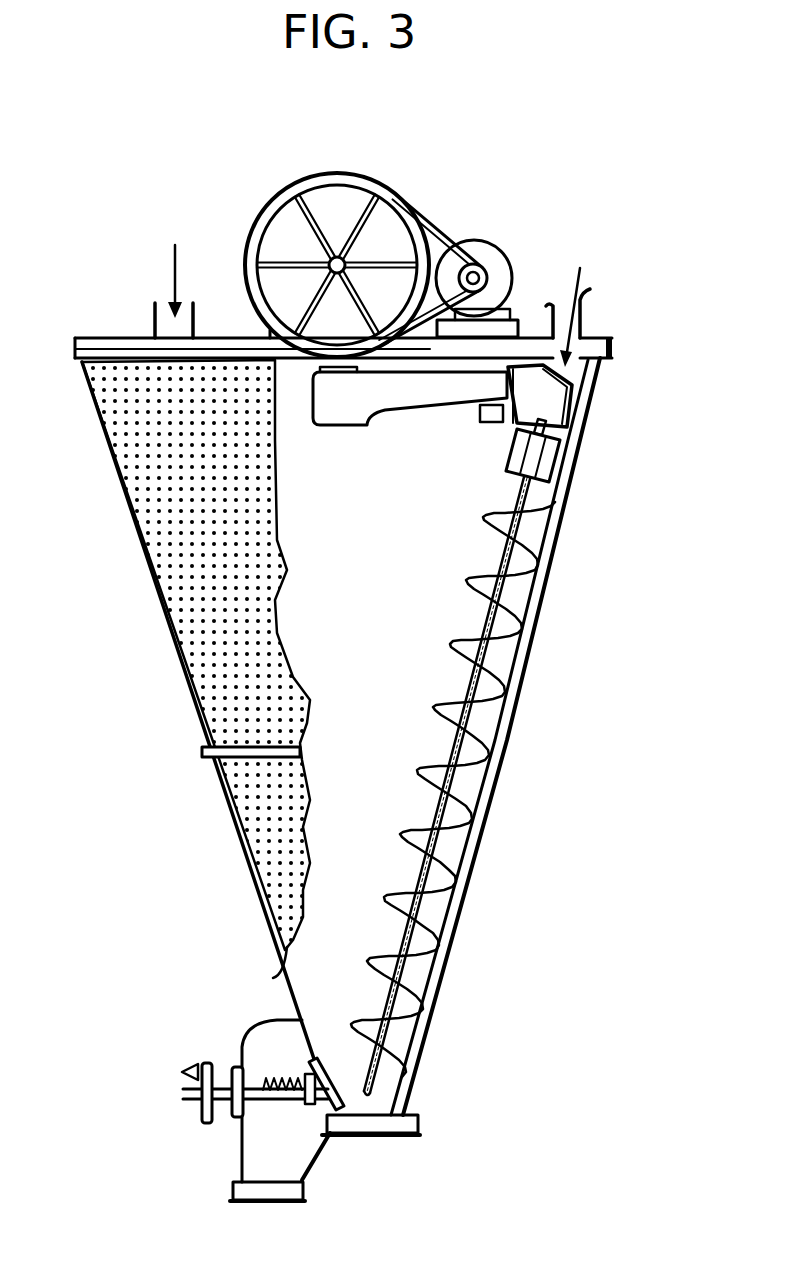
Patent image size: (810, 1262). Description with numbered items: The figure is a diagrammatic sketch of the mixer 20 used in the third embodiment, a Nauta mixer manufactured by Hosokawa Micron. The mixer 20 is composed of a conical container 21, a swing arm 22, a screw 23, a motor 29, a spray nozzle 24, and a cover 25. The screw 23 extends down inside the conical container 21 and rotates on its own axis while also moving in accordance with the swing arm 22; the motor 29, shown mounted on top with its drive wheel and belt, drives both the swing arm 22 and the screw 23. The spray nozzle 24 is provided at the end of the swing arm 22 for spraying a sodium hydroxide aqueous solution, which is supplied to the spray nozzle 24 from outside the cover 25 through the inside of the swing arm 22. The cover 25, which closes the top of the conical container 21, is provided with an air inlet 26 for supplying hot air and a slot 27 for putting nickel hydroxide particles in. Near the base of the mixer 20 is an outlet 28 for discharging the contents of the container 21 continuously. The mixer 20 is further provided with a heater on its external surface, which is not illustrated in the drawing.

The mixer 20 is at (648, 343).
The conical container 21 is at (596, 428).
The swing arm 22 is at (400, 417).
The screw 23 is at (497, 567).
The spray nozzle 24 is at (482, 422).
The cover 25 is at (105, 345).
The air inlet 26 is at (589, 290).
The slot 27 is at (182, 323).
The outlet 28 is at (253, 1048).
The motor 29 is at (485, 250).